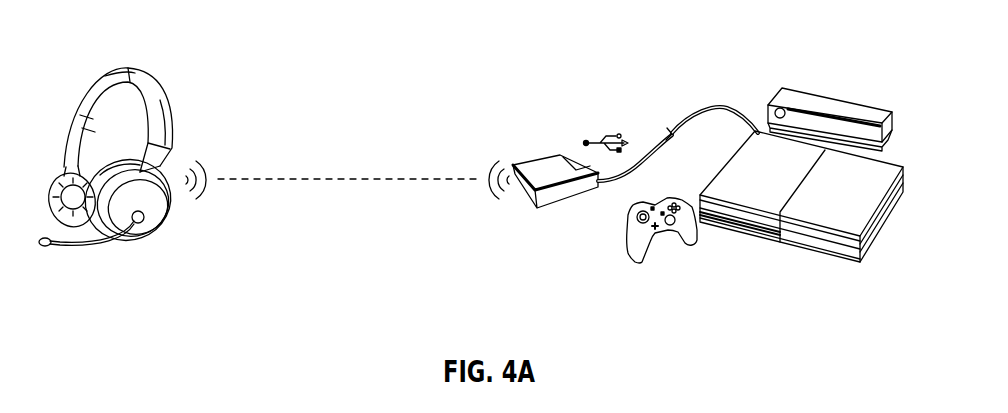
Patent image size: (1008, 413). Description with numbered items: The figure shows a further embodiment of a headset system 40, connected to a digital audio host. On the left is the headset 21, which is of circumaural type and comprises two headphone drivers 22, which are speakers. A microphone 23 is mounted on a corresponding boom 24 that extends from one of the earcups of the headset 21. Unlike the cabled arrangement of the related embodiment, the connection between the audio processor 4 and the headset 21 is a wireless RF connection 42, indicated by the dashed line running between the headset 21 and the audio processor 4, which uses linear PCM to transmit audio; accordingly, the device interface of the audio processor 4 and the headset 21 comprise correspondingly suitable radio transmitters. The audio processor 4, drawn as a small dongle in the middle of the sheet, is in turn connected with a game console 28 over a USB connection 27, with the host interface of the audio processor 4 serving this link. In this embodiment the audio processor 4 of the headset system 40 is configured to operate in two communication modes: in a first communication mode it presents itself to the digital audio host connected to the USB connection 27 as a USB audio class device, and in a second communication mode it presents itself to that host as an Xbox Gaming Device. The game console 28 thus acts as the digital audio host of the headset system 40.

The headset system 40 is at (640, 37).
The headset 21 is at (174, 116).
The headphone drivers 22 is at (57, 183).
The microphone 23 is at (47, 246).
The boom 24 is at (100, 246).
The wireless RF connection 42 is at (436, 178).
The audio processor 4 is at (537, 156).
The USB connection 27 is at (718, 108).
The game console 28 is at (812, 250).